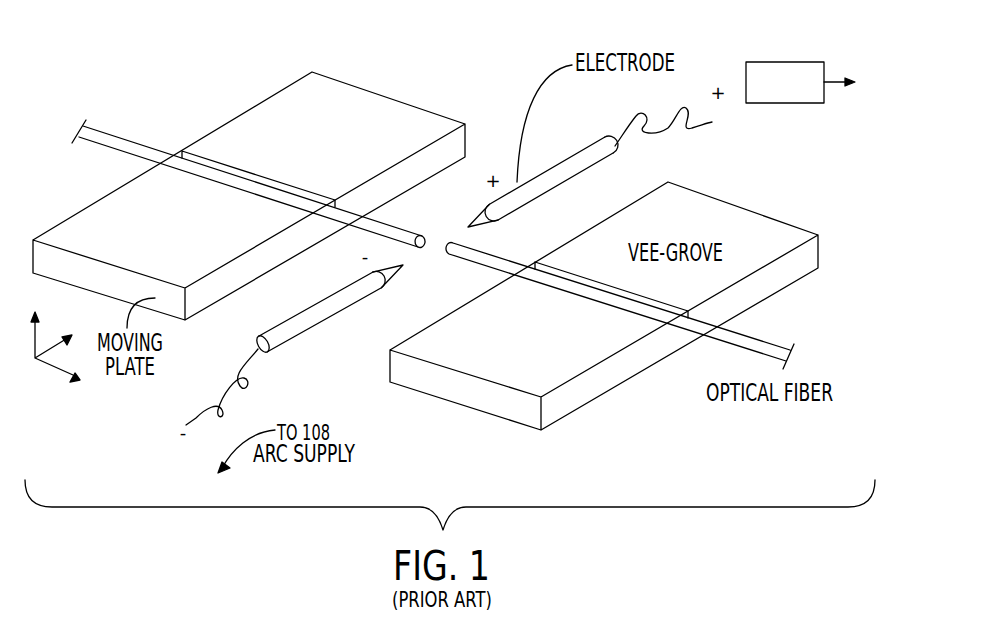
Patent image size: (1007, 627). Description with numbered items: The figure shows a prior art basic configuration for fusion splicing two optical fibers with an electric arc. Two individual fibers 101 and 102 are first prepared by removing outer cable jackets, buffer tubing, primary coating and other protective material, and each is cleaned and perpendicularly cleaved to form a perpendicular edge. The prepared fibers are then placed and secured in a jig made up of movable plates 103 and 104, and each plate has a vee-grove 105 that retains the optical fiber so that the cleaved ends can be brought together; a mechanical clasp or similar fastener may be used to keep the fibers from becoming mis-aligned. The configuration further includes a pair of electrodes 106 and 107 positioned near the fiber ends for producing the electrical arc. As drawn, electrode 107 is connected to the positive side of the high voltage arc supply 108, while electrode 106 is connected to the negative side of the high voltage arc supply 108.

The optical fiber 101 is at (120, 137).
The optical fiber 102 is at (763, 338).
The movable plate 103 is at (97, 222).
The movable plate 104 is at (583, 396).
The vee-grove 105 is at (283, 187).
The electrode 106 is at (293, 330).
The electrode 107 is at (580, 148).
The high voltage arc supply 108 is at (772, 62).